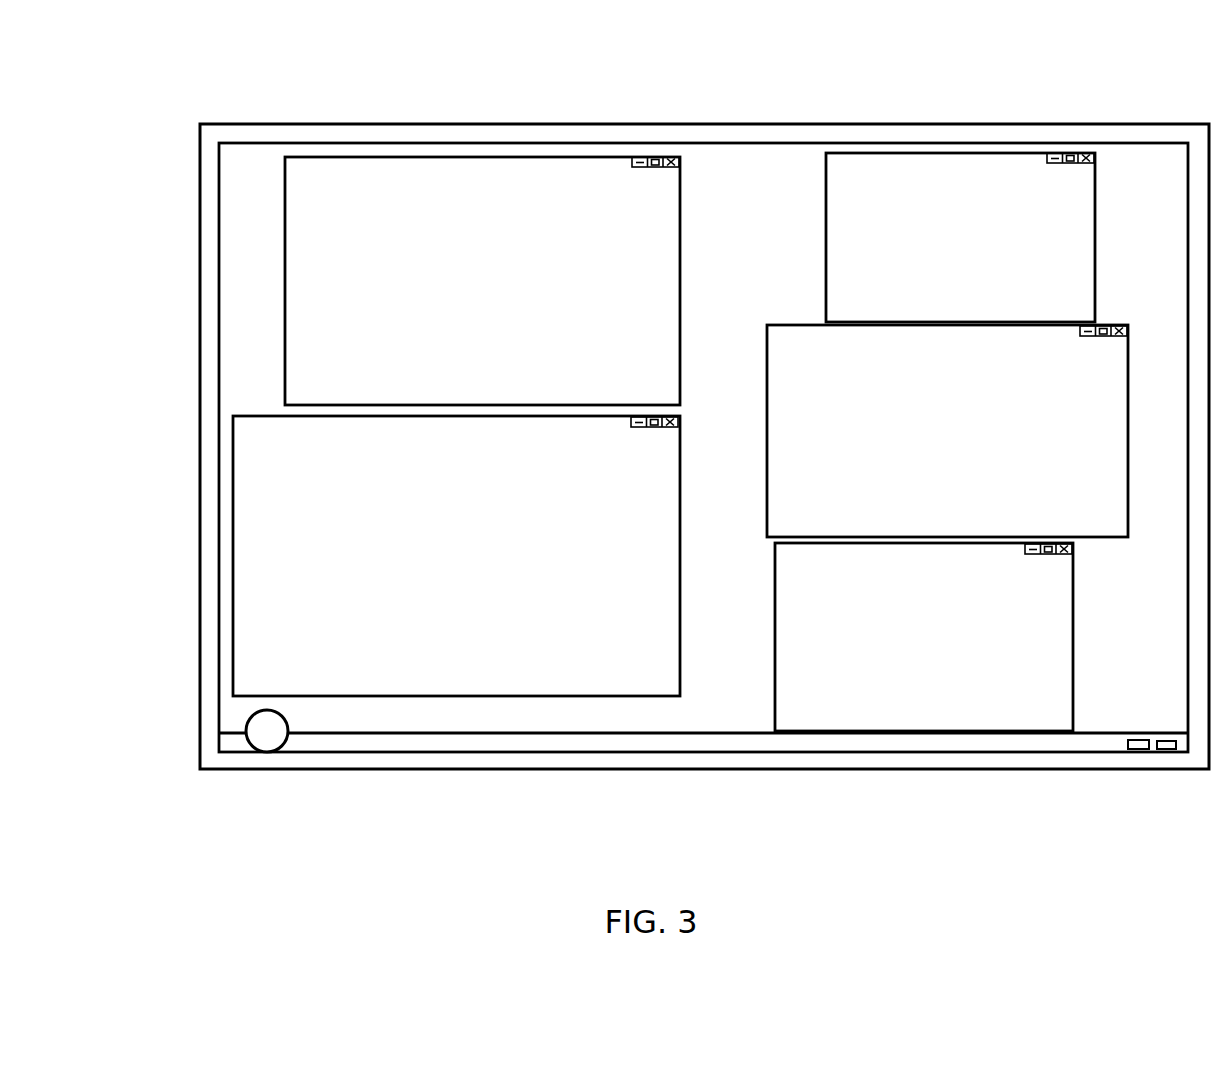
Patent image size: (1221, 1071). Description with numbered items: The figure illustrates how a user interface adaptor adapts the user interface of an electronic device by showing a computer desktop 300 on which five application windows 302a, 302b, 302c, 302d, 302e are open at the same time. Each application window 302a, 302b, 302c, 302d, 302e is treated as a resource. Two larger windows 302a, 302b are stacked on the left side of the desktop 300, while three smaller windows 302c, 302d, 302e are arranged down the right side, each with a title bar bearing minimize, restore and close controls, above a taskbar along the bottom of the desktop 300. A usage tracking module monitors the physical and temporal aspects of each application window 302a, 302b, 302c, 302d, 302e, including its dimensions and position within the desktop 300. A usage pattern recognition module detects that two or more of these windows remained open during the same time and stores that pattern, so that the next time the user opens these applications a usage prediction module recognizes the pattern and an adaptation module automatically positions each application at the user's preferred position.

The computer desktop 300 is at (226, 80).
The application window 302a is at (482, 281).
The application window 302b is at (456, 556).
The application window 302c is at (960, 237).
The application window 302d is at (947, 431).
The application window 302e is at (924, 637).